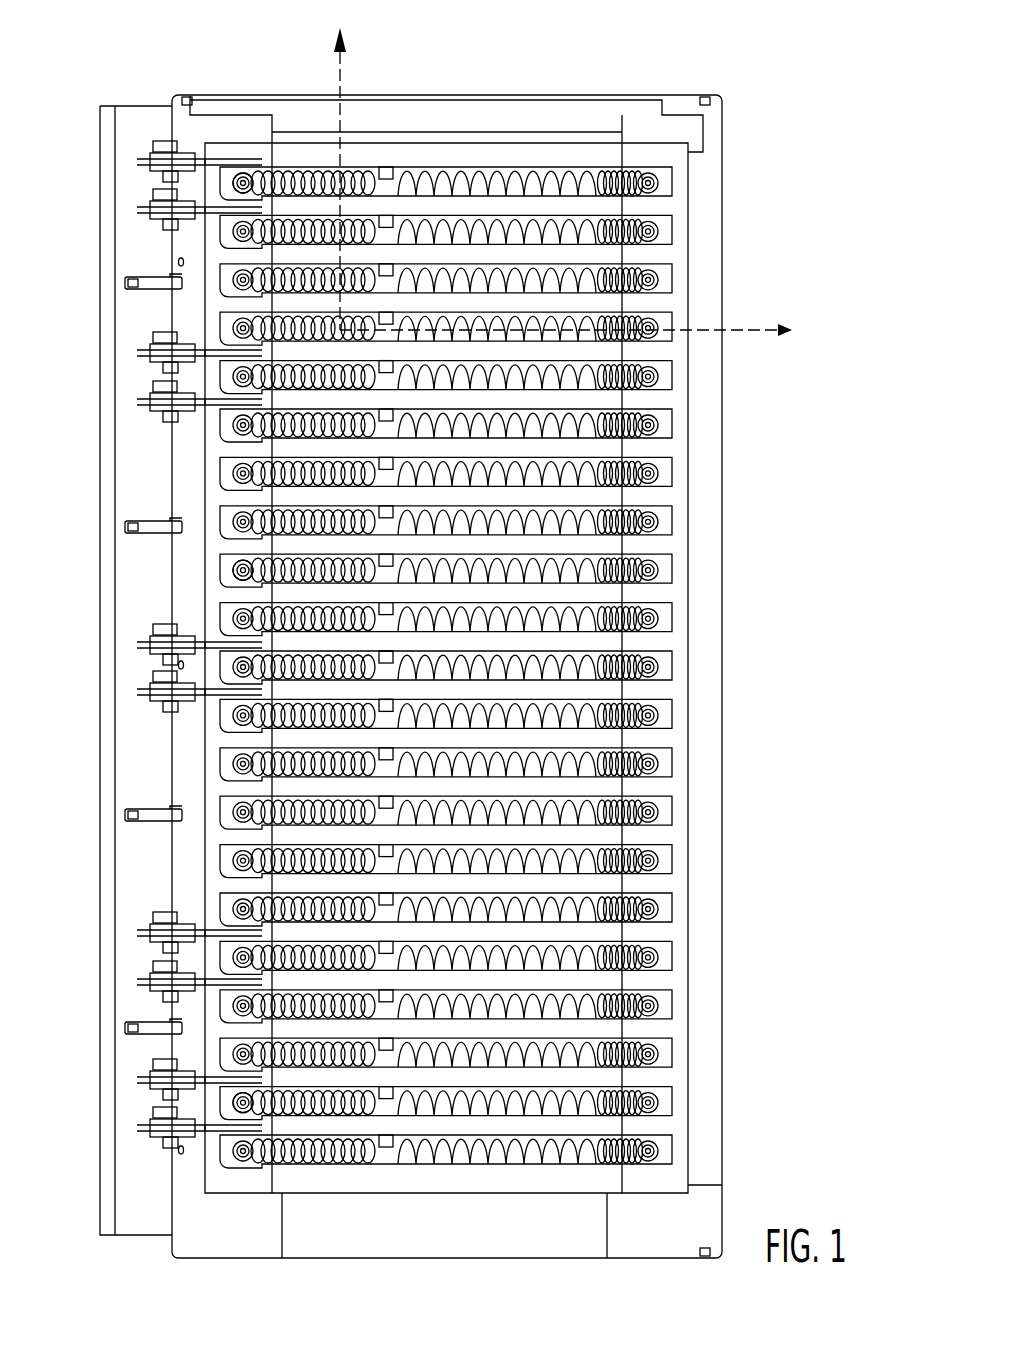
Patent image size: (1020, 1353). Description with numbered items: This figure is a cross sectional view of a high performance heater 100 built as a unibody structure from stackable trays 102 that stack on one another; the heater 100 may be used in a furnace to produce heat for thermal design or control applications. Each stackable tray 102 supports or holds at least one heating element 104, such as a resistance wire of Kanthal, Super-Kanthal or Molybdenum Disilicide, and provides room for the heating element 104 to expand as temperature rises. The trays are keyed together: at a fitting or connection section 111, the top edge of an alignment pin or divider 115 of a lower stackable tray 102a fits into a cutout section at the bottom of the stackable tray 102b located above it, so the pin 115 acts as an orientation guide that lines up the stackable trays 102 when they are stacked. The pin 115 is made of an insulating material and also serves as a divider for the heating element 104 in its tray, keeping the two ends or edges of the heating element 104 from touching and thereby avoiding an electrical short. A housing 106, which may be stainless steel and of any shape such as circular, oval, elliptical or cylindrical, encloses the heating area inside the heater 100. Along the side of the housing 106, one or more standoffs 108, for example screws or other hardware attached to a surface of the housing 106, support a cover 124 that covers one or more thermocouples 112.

The high performance heater 100 is at (105, 28).
The stackable trays 102 is at (663, 258).
The stackable tray 102a is at (374, 698).
The stackable tray 102b is at (374, 650).
The heating element 104 is at (222, 185).
The housing 106 is at (700, 1105).
The standoffs 108 is at (137, 808).
The fitting or connection section 111 is at (390, 643).
The thermocouples 112 is at (147, 926).
The alignment pin or divider 115 is at (390, 691).
The cover 124 is at (155, 463).